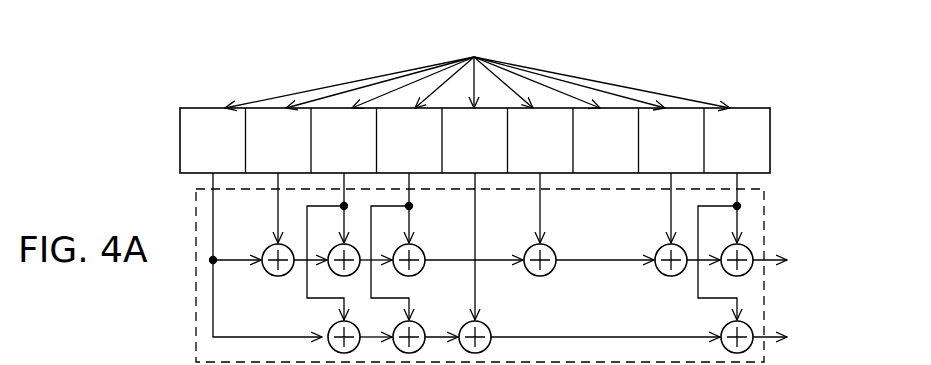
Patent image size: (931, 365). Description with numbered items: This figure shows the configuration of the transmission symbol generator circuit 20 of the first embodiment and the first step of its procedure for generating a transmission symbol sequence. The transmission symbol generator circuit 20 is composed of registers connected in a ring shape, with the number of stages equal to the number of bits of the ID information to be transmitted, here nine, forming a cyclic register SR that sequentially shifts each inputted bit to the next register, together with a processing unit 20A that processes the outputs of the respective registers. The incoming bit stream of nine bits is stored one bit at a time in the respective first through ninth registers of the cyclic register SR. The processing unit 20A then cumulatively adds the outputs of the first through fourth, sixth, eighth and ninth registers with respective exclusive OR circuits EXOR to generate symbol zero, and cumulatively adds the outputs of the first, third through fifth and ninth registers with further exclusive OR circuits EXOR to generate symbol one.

The transmission symbol generator circuit 20 is at (193, 89).
The processing unit 20A is at (768, 219).
The cyclic register SR is at (772, 136).
The exclusive OR circuit EXOR is at (549, 247).